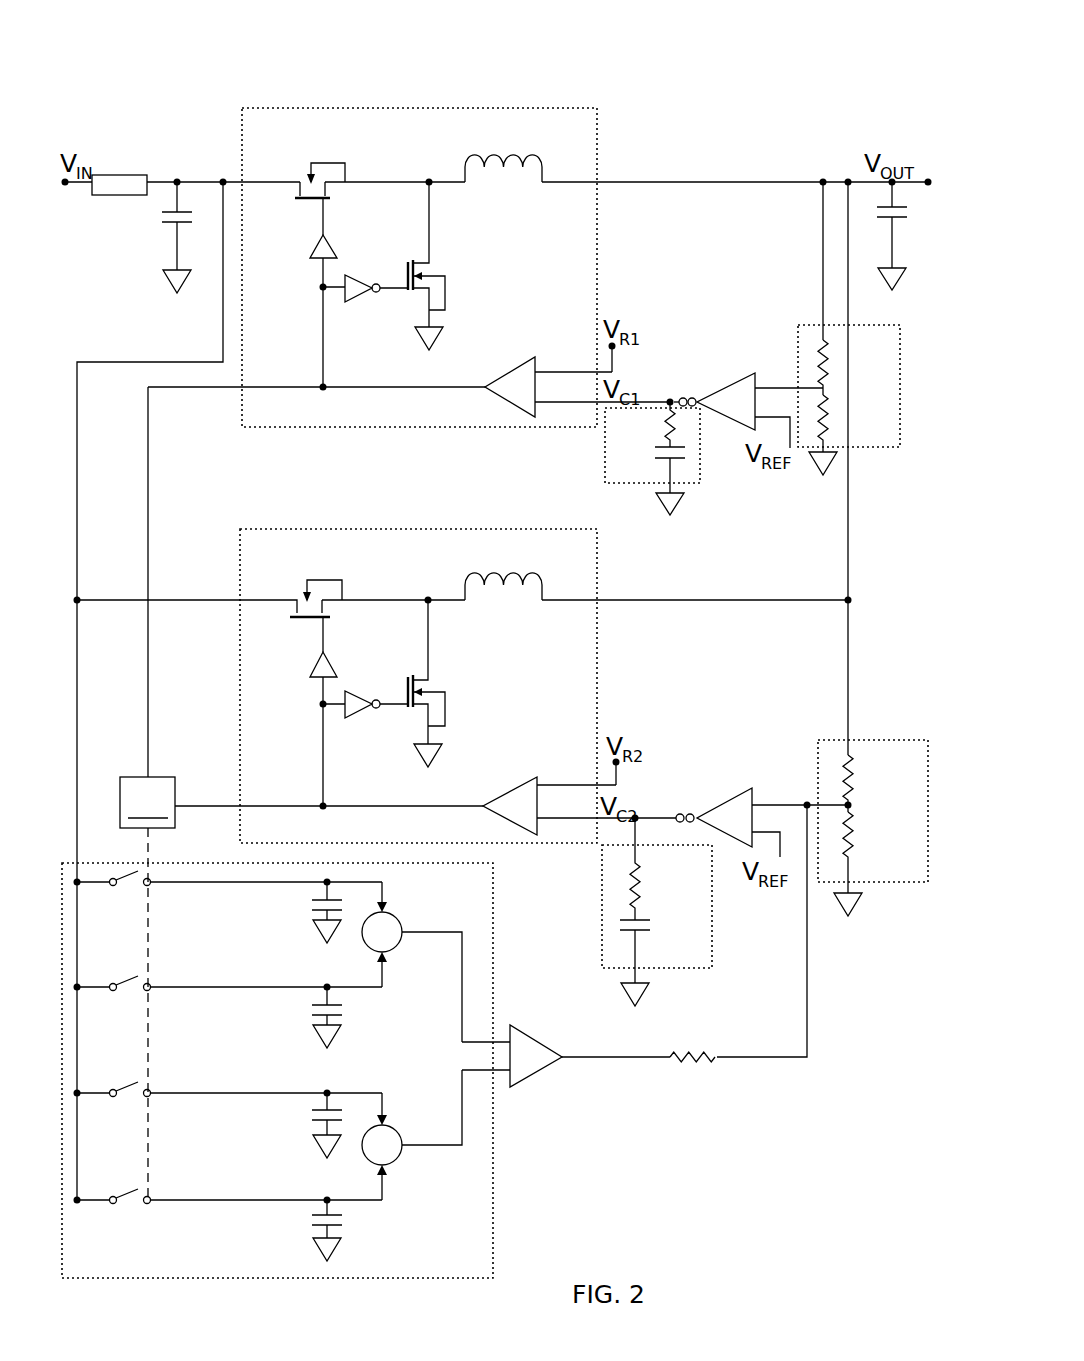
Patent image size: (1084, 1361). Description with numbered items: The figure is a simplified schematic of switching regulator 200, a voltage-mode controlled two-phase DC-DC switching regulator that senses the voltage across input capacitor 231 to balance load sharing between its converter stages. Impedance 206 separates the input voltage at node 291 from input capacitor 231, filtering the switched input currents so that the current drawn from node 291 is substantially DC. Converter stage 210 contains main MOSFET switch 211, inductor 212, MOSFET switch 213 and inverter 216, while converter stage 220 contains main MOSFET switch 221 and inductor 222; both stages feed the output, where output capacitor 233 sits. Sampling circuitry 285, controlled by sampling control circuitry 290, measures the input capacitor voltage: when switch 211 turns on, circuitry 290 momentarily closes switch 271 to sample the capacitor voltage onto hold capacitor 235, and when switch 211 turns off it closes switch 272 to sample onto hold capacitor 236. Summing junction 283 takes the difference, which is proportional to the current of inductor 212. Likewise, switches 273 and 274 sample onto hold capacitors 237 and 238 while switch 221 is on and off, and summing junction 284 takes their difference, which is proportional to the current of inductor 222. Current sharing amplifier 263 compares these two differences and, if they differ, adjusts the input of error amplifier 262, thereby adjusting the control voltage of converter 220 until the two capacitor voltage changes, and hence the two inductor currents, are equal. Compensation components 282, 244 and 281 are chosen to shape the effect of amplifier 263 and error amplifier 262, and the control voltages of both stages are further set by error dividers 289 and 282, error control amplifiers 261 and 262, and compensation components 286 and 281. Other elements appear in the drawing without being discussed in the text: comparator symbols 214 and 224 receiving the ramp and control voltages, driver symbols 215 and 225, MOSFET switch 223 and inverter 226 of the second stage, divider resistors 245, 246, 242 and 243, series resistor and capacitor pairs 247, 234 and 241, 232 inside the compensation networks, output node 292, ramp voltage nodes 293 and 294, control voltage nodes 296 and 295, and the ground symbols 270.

The switching regulator 200 is at (720, 76).
The impedance 206 is at (118, 175).
The converter stage 210 is at (425, 108).
The main MOSFET switch 211 is at (320, 170).
The inductor 212 is at (492, 160).
The MOSFET switch 213 is at (420, 268).
The first comparator 214 is at (488, 382).
The first driver buffer 215 is at (313, 248).
The inverter 216 is at (365, 296).
The converter stage 220 is at (455, 529).
The main MOSFET switch 221 is at (318, 585).
The inductor 222 is at (498, 580).
The second synchronous rectifier transistor 223 is at (420, 688).
The second comparator 224 is at (495, 795).
The second driver buffer 225 is at (312, 668).
The second inverter 226 is at (358, 715).
The input capacitor 231 is at (165, 215).
The compensation capacitor 232 is at (650, 930).
The output capacitor 233 is at (908, 217).
The compensation capacitor 234 is at (658, 453).
The hold capacitor 235 is at (312, 907).
The hold capacitor 236 is at (312, 1012).
The hold capacitor 237 is at (312, 1117).
The hold capacitor 238 is at (312, 1222).
The compensation resistor 241 is at (645, 885).
The feedback divider resistor 242 is at (855, 790).
The feedback divider resistor 243 is at (855, 855).
The compensation component 244 is at (702, 1063).
The feedback divider resistor 245 is at (830, 360).
The feedback divider resistor 246 is at (830, 435).
The compensation resistor 247 is at (665, 428).
The error control amplifier 261 is at (742, 380).
The error amplifier 262 is at (740, 795).
The current sharing amplifier 263 is at (522, 1033).
The ground 270 is at (172, 285).
The switch 271 is at (120, 890).
The switch 272 is at (120, 995).
The switch 273 is at (120, 1100).
The switch 274 is at (120, 1205).
The compensation components 281 is at (712, 900).
The error divider 282 is at (855, 742).
The summing junction 283 is at (402, 925).
The summing junction 284 is at (402, 1138).
The sampling circuitry 285 is at (493, 1175).
The compensation components 286 is at (700, 455).
The error divider 289 is at (900, 388).
The sampling control circuitry 290 is at (148, 988).
The node 291 is at (67, 186).
The output terminal 292 is at (928, 180).
The first ramp signal node 293 is at (615, 347).
The second ramp signal node 294 is at (619, 762).
The second control node 295 is at (640, 812).
The first control node 296 is at (665, 395).